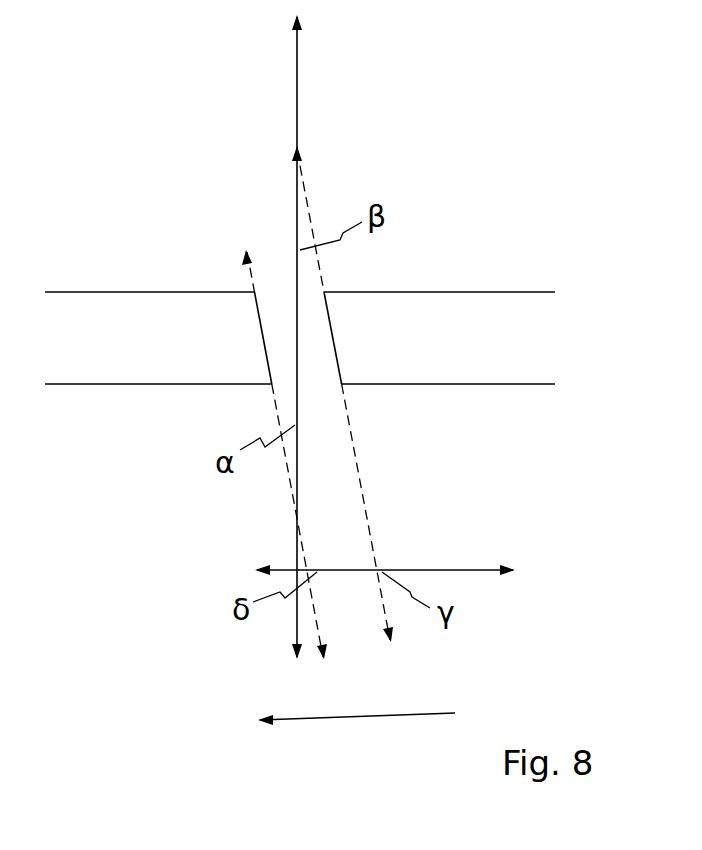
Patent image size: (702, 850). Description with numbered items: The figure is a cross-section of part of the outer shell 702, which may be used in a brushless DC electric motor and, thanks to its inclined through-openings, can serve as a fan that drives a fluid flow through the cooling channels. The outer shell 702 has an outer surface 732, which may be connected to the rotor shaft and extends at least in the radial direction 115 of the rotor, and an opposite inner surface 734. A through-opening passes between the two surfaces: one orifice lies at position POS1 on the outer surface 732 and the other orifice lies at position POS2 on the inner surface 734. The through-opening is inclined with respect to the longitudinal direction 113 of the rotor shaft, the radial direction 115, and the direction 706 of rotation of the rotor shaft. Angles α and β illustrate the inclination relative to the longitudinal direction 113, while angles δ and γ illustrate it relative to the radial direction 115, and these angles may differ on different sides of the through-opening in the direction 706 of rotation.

The longitudinal direction 113 is at (251, 336).
The outer surface 732 is at (289, 264).
The inner surface 734 is at (289, 418).
The outer shell 702 is at (289, 345).
The radial direction 115 is at (385, 544).
The direction of rotation 706 is at (374, 691).
The first orifice position POS1 is at (236, 418).
The second orifice position POS2 is at (213, 338).